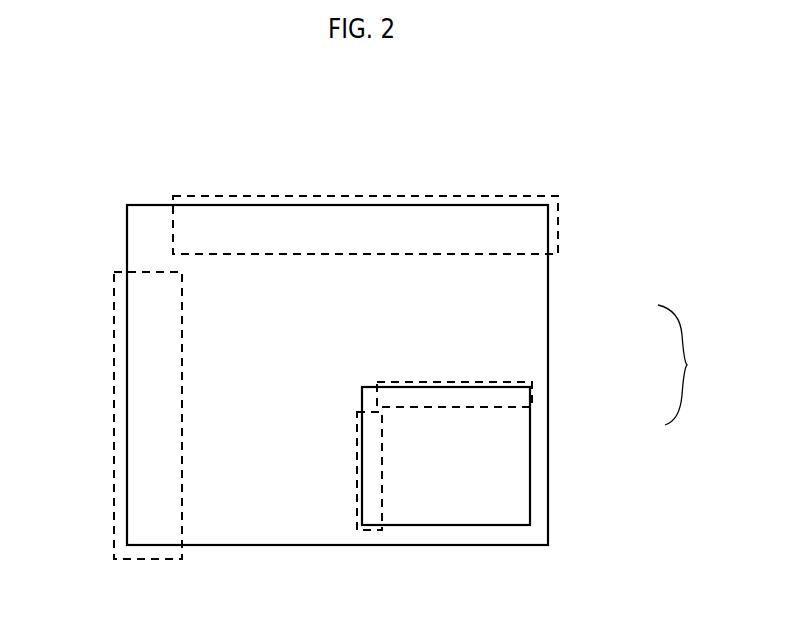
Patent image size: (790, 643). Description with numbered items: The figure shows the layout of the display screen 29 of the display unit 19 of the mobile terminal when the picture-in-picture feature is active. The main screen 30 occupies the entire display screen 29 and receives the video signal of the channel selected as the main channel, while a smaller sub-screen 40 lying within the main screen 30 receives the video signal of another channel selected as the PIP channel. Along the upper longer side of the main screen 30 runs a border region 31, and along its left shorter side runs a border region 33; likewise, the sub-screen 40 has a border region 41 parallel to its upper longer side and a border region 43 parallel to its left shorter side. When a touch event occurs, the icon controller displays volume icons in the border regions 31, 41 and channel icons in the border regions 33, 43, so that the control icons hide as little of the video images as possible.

The display unit 19 is at (160, 206).
The display screen 29 is at (686, 365).
The main screen 30 is at (548, 309).
The border region 31 is at (212, 195).
The border region 33 is at (113, 410).
The sub-screen 40 is at (530, 420).
The border region 41 is at (448, 407).
The border region 43 is at (357, 468).